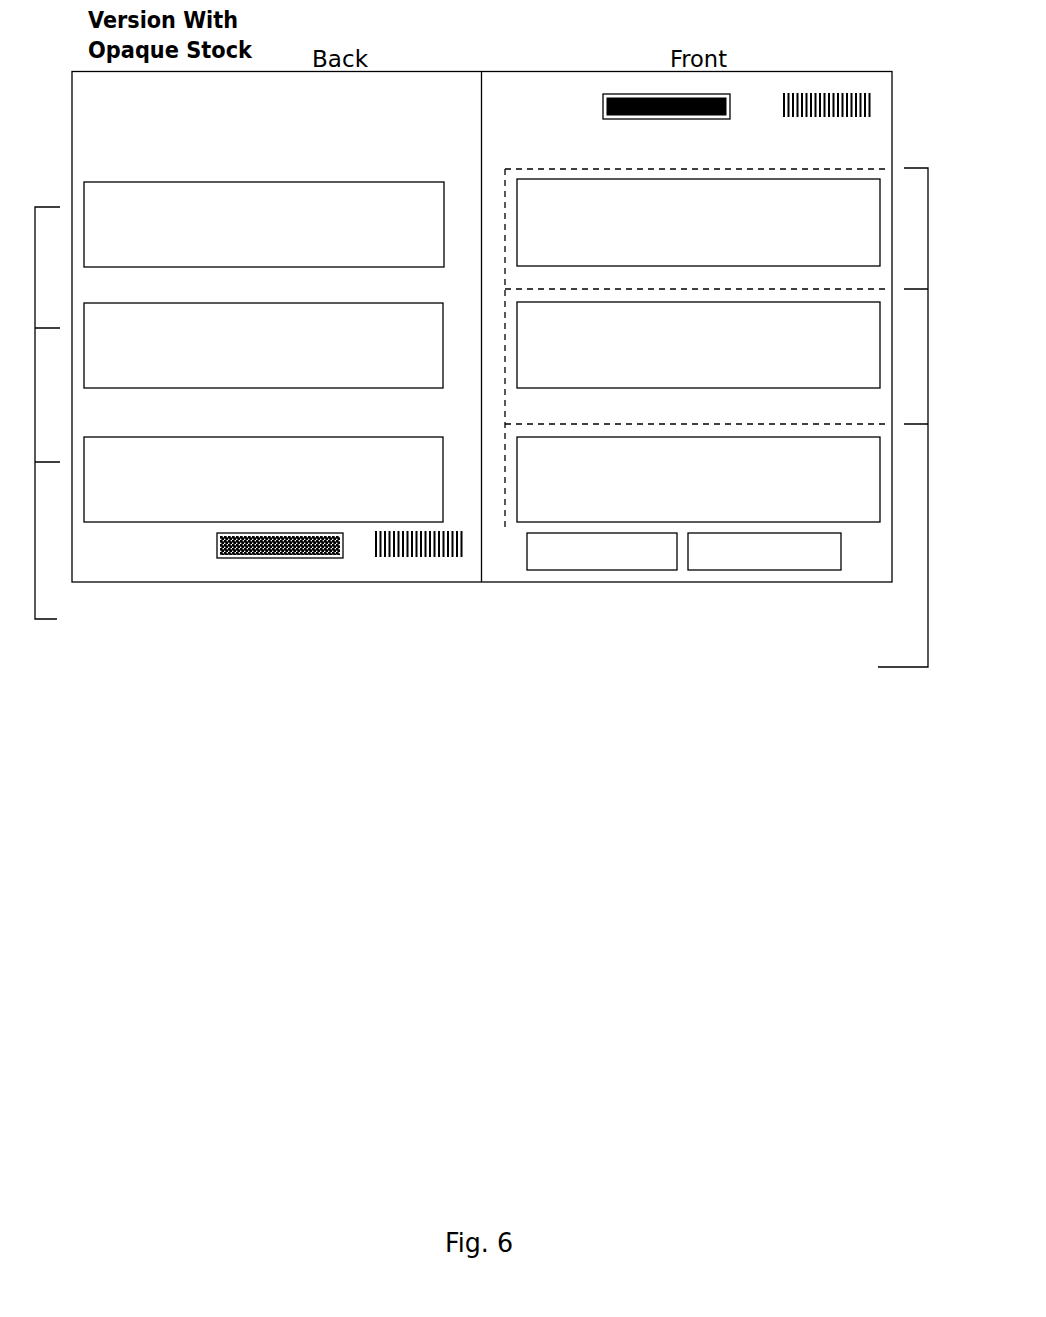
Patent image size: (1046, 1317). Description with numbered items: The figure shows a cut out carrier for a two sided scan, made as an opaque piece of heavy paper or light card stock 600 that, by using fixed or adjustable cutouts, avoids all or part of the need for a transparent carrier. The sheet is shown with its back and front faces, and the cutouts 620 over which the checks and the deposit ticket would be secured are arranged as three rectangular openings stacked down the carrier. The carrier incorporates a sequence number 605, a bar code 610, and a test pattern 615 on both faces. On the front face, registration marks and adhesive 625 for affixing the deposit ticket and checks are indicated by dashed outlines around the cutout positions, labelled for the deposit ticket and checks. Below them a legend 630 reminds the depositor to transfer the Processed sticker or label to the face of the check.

The opaque piece of heavy paper or light card stock 600 is at (432, 70).
The sequence number 605 is at (543, 82).
The bar code 610 is at (843, 82).
The test pattern 615 is at (653, 82).
The cutouts 620 is at (68, 418).
The registration marks and adhesive 625 is at (504, 535).
The legend 630 is at (553, 570).